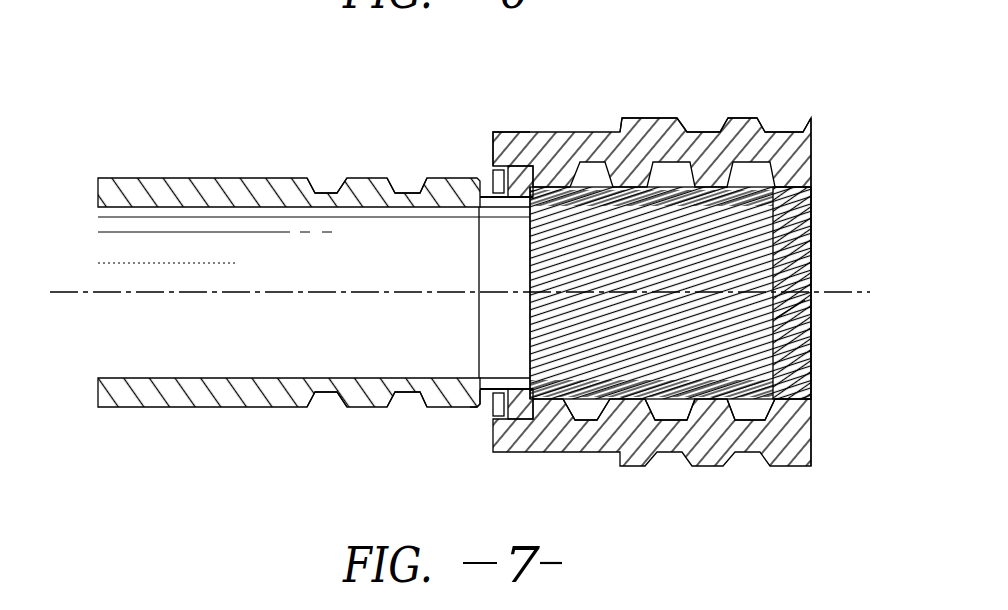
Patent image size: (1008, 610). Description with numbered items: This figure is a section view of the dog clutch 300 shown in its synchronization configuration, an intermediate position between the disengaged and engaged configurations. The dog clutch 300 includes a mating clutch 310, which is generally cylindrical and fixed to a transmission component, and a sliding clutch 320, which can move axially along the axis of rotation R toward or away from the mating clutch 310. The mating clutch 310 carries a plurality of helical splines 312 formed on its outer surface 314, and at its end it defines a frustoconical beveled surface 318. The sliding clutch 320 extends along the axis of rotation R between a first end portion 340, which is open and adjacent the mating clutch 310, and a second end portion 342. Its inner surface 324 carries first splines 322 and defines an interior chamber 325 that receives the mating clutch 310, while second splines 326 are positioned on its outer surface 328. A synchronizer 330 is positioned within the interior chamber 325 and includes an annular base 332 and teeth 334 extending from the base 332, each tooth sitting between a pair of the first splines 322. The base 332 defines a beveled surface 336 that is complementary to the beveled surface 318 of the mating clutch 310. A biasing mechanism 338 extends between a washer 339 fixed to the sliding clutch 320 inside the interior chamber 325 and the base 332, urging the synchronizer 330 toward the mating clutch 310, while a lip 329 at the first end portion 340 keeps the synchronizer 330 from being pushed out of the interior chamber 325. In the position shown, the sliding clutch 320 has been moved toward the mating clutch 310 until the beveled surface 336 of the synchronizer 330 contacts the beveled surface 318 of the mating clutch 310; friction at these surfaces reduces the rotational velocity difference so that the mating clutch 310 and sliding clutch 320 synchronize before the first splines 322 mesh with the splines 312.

The dog clutch 300 is at (728, 55).
The mating clutch 310 is at (291, 293).
The splines 312 is at (400, 180).
The outer surface 314 is at (232, 408).
The beveled surface 318 is at (479, 218).
The sliding clutch 320 is at (787, 423).
The first splines 322 is at (672, 407).
The inner surface 324 is at (567, 410).
The interior chamber 325 is at (790, 218).
The second splines 326 is at (780, 117).
The outer surface 328 is at (583, 130).
The lip 329 is at (495, 165).
The synchronizer 330 is at (490, 318).
The base 332 is at (497, 208).
The teeth 334 is at (525, 165).
The beveled surface 336 is at (492, 398).
The biasing mechanism 338 is at (700, 276).
The washer 339 is at (793, 313).
The first end portion 340 is at (493, 130).
The second end portion 342 is at (811, 115).
The axis of rotation R is at (60, 292).